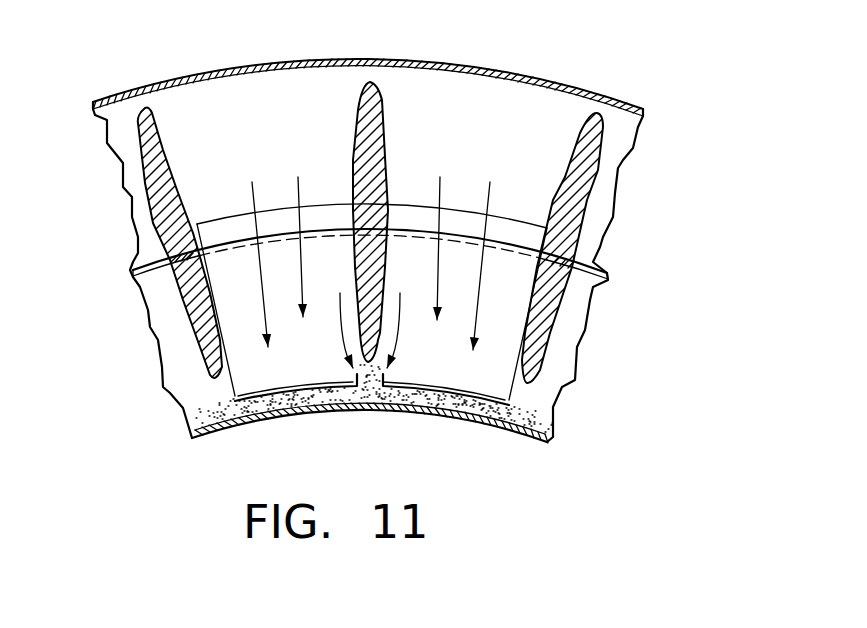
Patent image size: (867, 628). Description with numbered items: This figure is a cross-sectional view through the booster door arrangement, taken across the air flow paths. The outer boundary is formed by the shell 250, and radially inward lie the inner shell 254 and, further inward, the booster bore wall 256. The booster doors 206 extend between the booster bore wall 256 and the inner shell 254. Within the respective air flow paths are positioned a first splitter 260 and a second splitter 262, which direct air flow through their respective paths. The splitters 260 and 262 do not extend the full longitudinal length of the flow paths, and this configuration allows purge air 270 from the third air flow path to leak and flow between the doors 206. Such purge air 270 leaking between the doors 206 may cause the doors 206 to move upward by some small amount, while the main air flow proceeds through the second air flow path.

The shell 250 is at (310, 62).
The first splitter 260 is at (387, 100).
The second splitter 262 is at (197, 317).
The inner shell 254 is at (528, 238).
The booster door 206 is at (200, 399).
The purge air 270 is at (312, 402).
The booster bore wall 256 is at (443, 416).